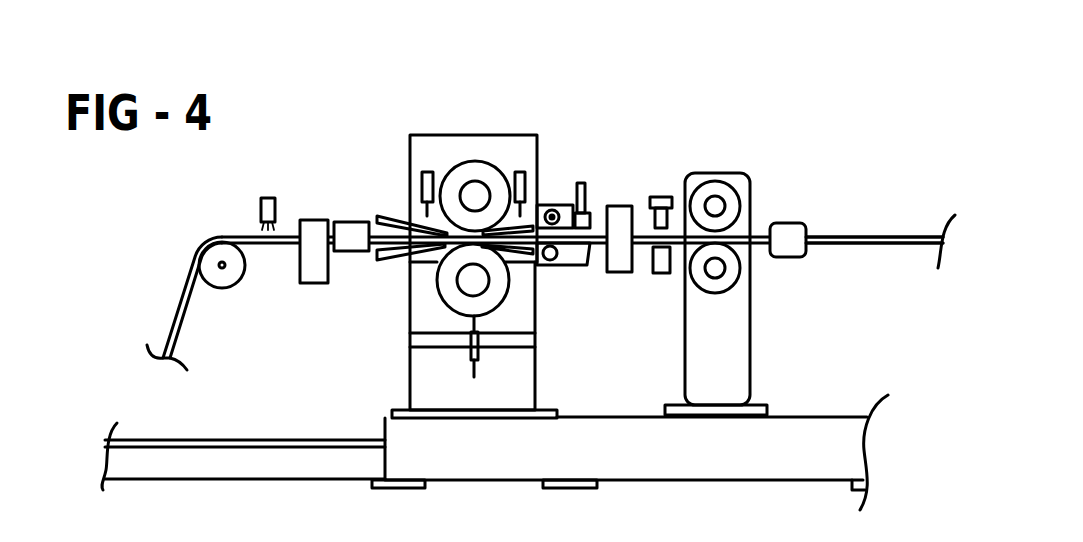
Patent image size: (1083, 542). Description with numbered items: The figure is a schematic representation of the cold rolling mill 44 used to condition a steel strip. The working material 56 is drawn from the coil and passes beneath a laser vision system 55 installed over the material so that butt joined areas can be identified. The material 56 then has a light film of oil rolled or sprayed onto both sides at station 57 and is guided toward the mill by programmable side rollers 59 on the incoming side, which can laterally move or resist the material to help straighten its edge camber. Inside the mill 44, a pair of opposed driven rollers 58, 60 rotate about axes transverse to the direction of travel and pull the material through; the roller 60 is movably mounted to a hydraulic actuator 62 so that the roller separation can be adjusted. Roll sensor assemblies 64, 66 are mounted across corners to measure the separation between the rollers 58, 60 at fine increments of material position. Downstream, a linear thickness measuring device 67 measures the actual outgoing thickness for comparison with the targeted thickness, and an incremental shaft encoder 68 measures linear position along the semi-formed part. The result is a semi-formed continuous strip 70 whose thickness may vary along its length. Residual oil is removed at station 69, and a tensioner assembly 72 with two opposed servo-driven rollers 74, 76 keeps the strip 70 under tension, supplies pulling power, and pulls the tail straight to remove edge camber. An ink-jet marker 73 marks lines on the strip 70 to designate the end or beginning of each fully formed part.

The cold rolling mill 44 is at (605, 117).
The laser vision system 55 is at (273, 208).
The working material 56 is at (197, 240).
The oil film application 57 is at (313, 270).
The roller 58 is at (480, 170).
The programmable side rollers 59 is at (350, 227).
The roller 60 is at (497, 290).
The hydraulic actuator 62 is at (490, 358).
The roll sensor assembly 64 is at (425, 173).
The roll sensor assembly 66 is at (523, 173).
The linear thickness measuring device 67 is at (585, 190).
The incremental shaft encoder 68 is at (545, 208).
The residual oil removal 69 is at (622, 258).
The semi-formed continuous strip of metal 70 is at (888, 238).
The tensioner assembly 72 is at (737, 162).
The ink-jet marker 73 is at (662, 205).
The roller 74 is at (730, 207).
The roller 76 is at (728, 282).